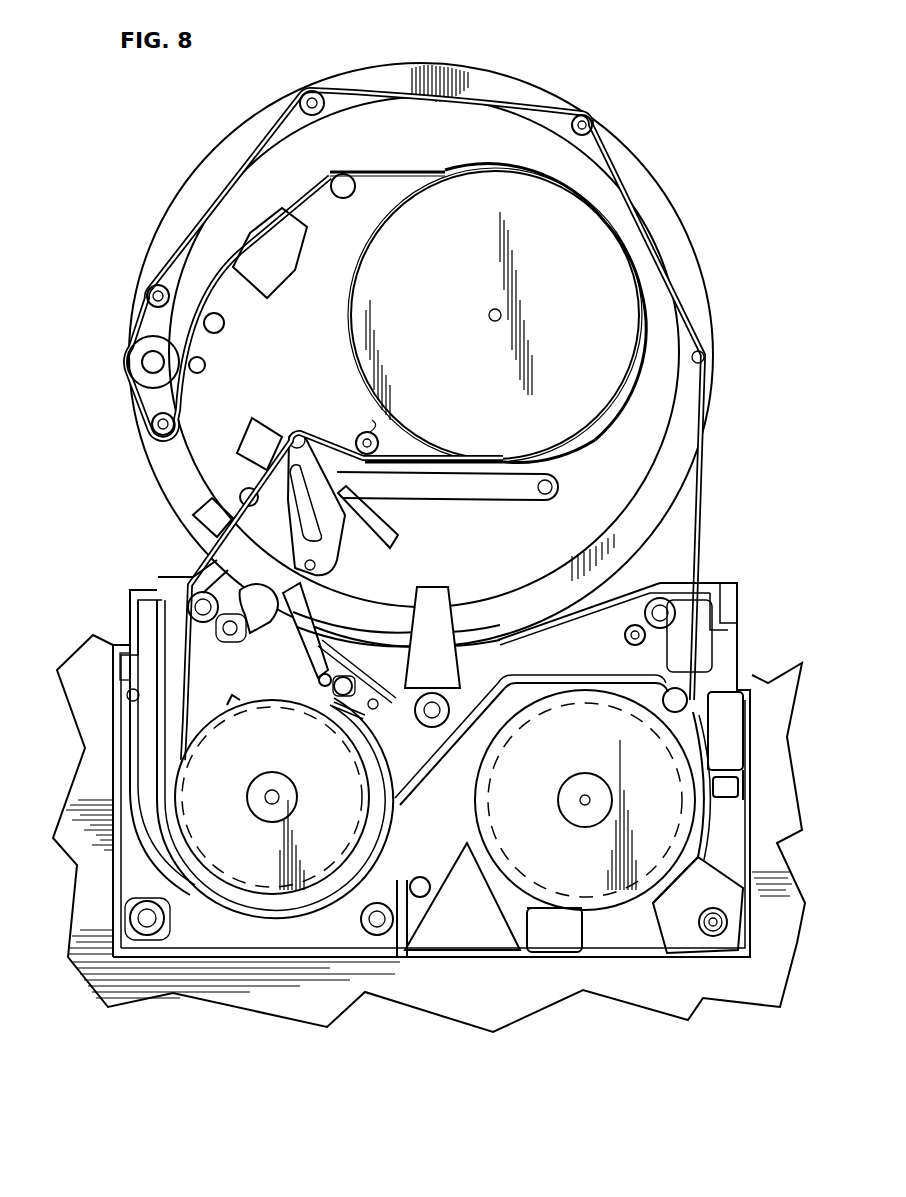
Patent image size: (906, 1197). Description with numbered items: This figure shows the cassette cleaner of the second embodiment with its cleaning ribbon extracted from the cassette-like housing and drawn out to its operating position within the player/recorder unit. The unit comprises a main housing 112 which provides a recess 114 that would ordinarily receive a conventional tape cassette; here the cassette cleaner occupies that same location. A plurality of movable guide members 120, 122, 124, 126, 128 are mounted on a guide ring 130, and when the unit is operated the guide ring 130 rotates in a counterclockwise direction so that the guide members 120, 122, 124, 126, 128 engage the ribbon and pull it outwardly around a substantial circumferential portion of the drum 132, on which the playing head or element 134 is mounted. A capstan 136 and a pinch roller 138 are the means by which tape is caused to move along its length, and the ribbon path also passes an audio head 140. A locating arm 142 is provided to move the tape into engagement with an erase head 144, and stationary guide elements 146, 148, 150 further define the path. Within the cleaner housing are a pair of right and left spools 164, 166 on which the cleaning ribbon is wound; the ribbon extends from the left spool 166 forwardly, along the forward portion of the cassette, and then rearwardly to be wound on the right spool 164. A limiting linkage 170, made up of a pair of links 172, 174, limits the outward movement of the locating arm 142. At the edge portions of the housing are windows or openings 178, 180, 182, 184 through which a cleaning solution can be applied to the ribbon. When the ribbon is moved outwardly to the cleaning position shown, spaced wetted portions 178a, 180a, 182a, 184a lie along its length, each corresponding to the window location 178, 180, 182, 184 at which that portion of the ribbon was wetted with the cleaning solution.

The main housing 112 is at (407, 1016).
The recess 114 is at (434, 954).
The movable guide member 120 is at (152, 424).
The movable guide member 122 is at (148, 296).
The movable guide member 124 is at (312, 90).
The movable guide member 126 is at (585, 114).
The movable guide member 128 is at (704, 358).
The guide ring 130 is at (695, 265).
The drum 132 is at (395, 216).
The playing head 134 is at (383, 226).
The capstan 136 is at (205, 365).
The pinch roller 138 is at (135, 358).
The audio head 140 is at (290, 270).
The locating arm 142 is at (468, 490).
The erase head 144 is at (258, 428).
The stationary guide element 146 is at (249, 488).
The stationary guide element 148 is at (224, 323).
The stationary guide element 150 is at (348, 188).
The right spool 164 is at (520, 860).
The left spool 166 is at (240, 895).
The limiting linkage 170 is at (347, 575).
The link 172 is at (290, 633).
The link 174 is at (347, 543).
The window 178 is at (735, 748).
The window 180 is at (725, 845).
The window 182 is at (640, 940).
The window 184 is at (495, 928).
The wetted ribbon portion 178a is at (640, 315).
The wetted ribbon portion 180a is at (598, 228).
The wetted ribbon portion 182a is at (505, 170).
The wetted ribbon portion 184a is at (390, 170).